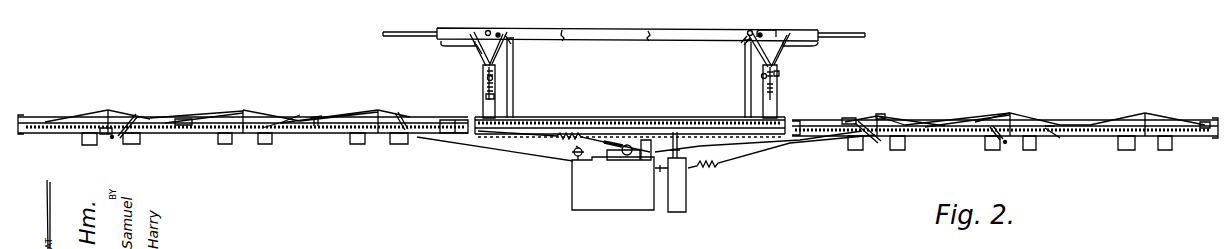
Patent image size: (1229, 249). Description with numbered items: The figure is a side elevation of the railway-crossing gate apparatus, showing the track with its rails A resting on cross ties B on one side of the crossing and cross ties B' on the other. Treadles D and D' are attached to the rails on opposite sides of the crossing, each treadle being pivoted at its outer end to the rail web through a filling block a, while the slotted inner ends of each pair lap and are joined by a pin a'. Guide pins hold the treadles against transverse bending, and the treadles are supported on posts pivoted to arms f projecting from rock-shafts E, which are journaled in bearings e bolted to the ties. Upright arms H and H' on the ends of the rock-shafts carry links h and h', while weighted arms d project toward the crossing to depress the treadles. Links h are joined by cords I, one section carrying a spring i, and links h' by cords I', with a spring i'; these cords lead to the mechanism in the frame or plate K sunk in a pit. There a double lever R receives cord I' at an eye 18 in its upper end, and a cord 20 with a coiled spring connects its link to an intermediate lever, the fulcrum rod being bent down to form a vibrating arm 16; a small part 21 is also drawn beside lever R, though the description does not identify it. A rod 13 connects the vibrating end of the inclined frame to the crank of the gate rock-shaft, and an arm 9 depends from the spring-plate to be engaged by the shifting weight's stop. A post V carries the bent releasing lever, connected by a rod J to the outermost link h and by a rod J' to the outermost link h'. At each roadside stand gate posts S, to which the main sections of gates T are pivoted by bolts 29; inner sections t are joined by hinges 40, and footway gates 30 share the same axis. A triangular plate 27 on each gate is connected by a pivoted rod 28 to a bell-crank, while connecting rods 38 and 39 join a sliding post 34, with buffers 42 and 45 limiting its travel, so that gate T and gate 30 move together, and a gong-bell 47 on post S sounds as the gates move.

The sectional gate T is at (624, 37).
The hinge 40 is at (563, 45).
The inner gate section t is at (648, 43).
The bolt 29 is at (768, 30).
The footway gate 30 is at (468, 30).
The gate post S is at (488, 75).
The connecting rod 39 is at (477, 51).
The buffer 45 is at (487, 78).
The buffer 42 is at (486, 96).
The triangular plate 27 is at (514, 44).
The sliding post 34 is at (779, 74).
The connecting rod 38 is at (744, 50).
The gong-bell 47 is at (761, 76).
The pivoted rod 28 is at (745, 92).
The pin a' is at (243, 112).
The cross tie B' is at (81, 144).
The rock-shaft E is at (122, 140).
The pivot c is at (107, 142).
The cord or wire I' is at (196, 110).
The treadle D' is at (237, 114).
The link h' is at (348, 114).
The arm d is at (316, 128).
The upright arm H' is at (406, 131).
The rod or wire J' is at (427, 149).
The spring i' is at (564, 141).
The frame or plate K is at (613, 183).
The double lever R is at (570, 154).
The pin 21 is at (581, 141).
The arm 9 is at (632, 161).
The rod 13 is at (651, 150).
The eye 18 is at (679, 145).
The cord or wire 20 is at (661, 177).
The vibrating arm 16 is at (677, 185).
The rod or wire J is at (758, 141).
The spring i is at (781, 158).
The rail A is at (1200, 112).
The filling block a is at (1207, 138).
The link h is at (892, 117).
The treadle D is at (890, 112).
The arm f is at (868, 139).
The cross tie B is at (947, 151).
The cord or wire I is at (1032, 117).
The upright arm H is at (982, 140).
The bearing e is at (1004, 149).
The post V is at (1058, 140).